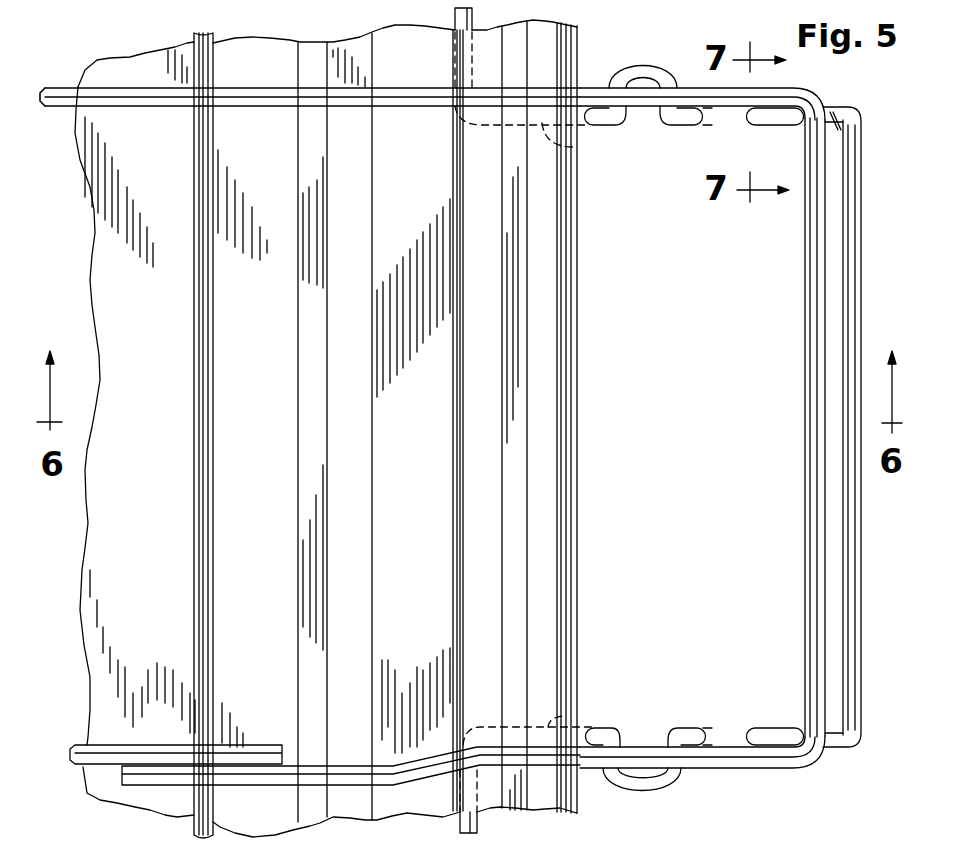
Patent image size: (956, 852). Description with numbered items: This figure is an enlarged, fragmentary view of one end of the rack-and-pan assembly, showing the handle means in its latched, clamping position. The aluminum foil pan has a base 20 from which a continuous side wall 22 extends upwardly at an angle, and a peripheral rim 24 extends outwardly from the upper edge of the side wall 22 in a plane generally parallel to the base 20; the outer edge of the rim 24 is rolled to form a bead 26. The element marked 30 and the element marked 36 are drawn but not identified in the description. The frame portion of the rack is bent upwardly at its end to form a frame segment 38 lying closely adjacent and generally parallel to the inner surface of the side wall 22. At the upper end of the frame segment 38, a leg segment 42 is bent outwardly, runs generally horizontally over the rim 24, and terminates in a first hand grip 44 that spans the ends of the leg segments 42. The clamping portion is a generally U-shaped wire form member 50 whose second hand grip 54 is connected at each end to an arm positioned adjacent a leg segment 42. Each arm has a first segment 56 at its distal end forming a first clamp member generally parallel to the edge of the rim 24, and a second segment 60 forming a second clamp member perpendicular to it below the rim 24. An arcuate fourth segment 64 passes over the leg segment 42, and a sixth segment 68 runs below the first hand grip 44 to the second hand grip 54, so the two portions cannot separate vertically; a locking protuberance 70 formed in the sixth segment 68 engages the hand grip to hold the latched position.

The base 20 is at (123, 565).
The continuous side wall 22 is at (440, 372).
The peripheral rim 24 is at (488, 430).
The bead 26 is at (570, 279).
The support bar 30 is at (203, 620).
The upper rail 36 is at (172, 100).
The frame segment 38 is at (430, 106).
The leg segment 42 is at (587, 88).
The first hand grip 44 is at (813, 557).
The U-shaped wire form member 50 is at (850, 100).
The second hand grip 54 is at (852, 490).
The first segment 56 is at (455, 15).
The second segment 60 is at (570, 148).
The arcuate fourth segment 64 is at (652, 44).
The sixth segment 68 is at (827, 127).
The locking protuberance 70 is at (767, 127).